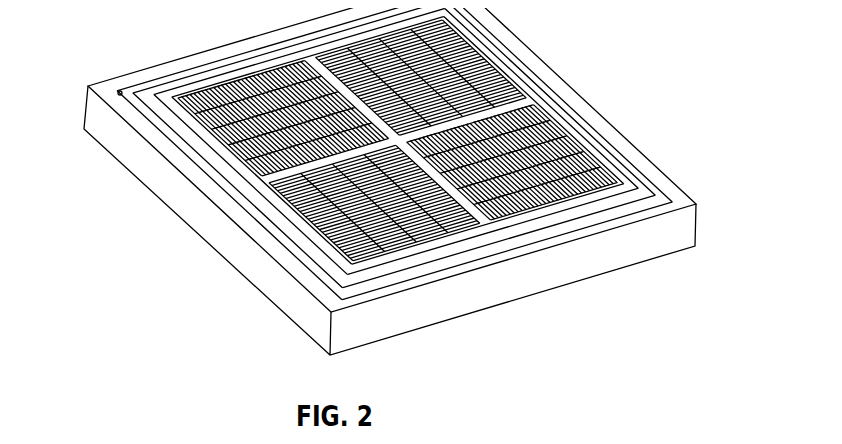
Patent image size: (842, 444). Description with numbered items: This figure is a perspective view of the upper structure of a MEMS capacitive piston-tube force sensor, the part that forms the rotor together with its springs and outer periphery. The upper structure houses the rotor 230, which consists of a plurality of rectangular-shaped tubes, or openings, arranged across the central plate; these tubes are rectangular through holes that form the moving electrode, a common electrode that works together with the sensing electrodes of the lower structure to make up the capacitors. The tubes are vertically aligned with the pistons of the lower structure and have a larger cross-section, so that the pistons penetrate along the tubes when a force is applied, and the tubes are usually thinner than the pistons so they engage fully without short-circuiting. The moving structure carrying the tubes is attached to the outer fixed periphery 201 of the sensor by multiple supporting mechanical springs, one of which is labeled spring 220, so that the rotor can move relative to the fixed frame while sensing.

The outer fixed periphery 201 is at (597, 117).
The mechanical spring 220 is at (408, 175).
The rotor tubes 230 is at (493, 83).